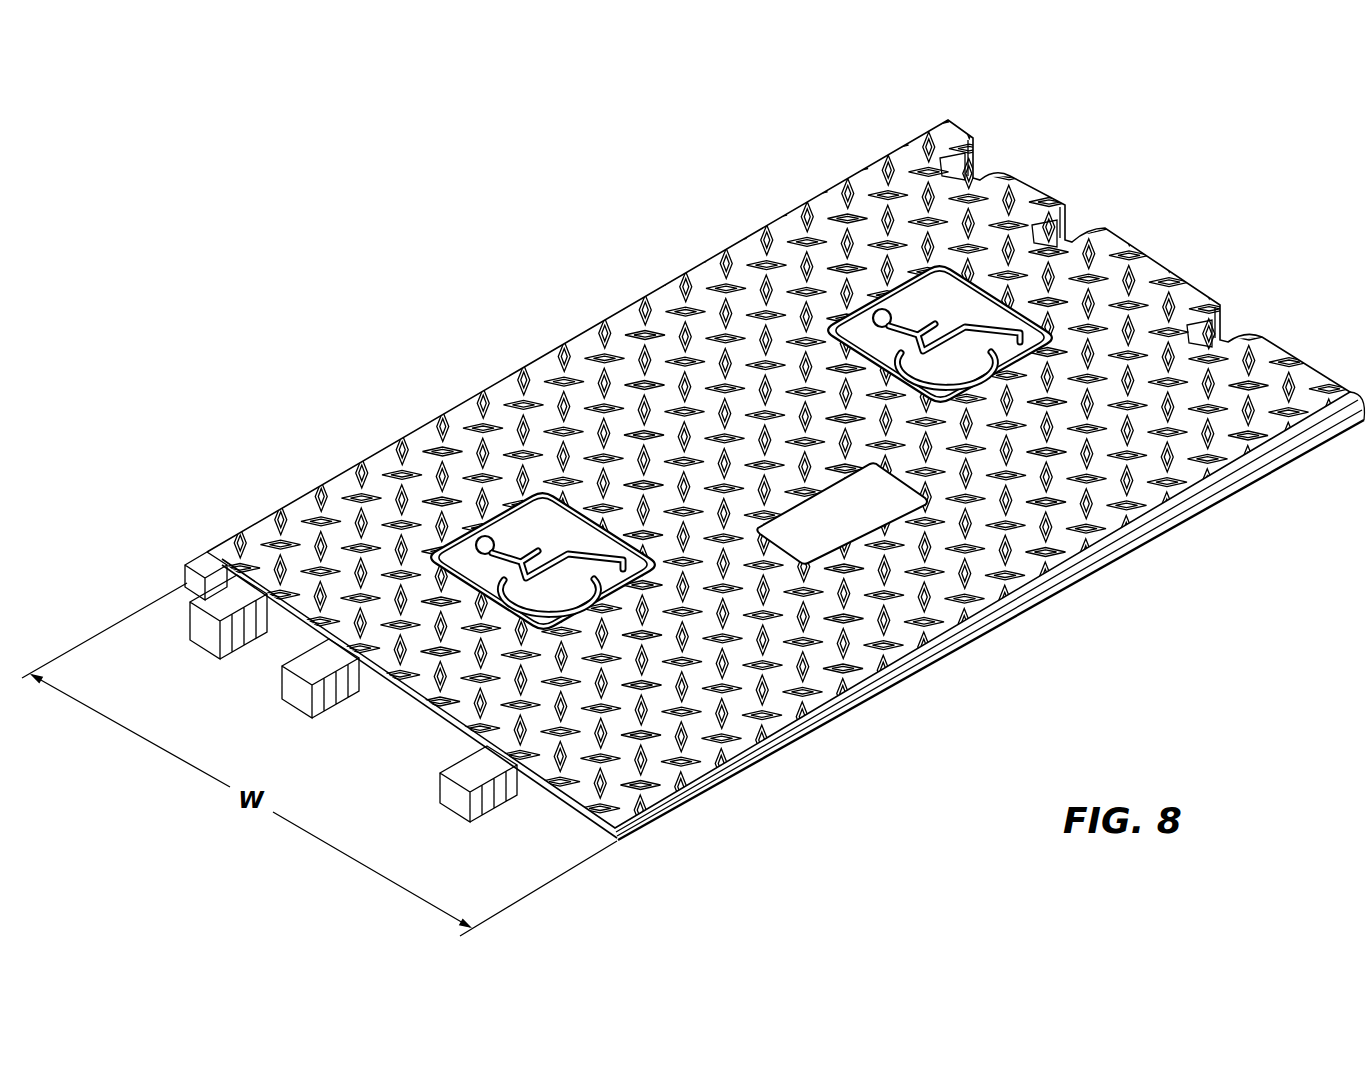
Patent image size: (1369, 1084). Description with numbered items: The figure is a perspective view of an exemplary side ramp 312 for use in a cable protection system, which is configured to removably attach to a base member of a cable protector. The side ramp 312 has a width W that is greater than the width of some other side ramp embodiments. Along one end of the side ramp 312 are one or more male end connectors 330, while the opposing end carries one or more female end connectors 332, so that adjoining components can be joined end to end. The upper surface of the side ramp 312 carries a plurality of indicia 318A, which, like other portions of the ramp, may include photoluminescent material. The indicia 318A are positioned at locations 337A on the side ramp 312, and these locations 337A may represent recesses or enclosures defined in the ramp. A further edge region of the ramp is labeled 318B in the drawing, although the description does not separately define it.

The side ramp 312 is at (870, 112).
The indicia 318A is at (522, 528).
The edge lip 318B is at (633, 805).
The male end connectors 330 is at (233, 664).
The female end connectors 332 is at (985, 165).
The locations 337A is at (435, 548).